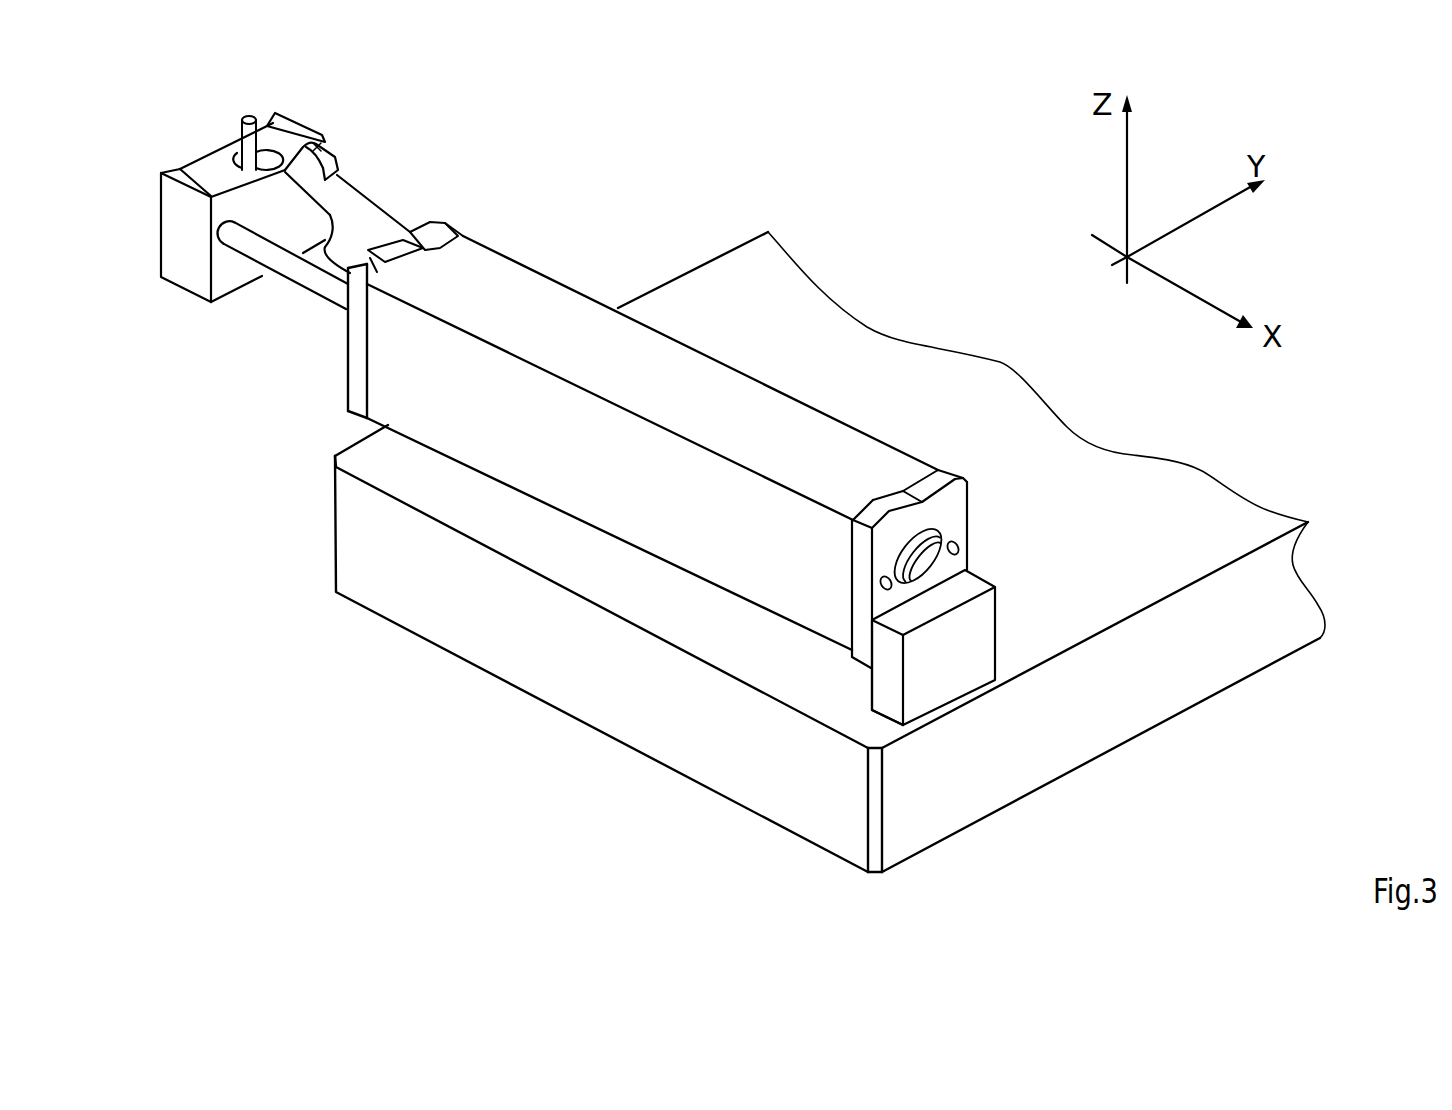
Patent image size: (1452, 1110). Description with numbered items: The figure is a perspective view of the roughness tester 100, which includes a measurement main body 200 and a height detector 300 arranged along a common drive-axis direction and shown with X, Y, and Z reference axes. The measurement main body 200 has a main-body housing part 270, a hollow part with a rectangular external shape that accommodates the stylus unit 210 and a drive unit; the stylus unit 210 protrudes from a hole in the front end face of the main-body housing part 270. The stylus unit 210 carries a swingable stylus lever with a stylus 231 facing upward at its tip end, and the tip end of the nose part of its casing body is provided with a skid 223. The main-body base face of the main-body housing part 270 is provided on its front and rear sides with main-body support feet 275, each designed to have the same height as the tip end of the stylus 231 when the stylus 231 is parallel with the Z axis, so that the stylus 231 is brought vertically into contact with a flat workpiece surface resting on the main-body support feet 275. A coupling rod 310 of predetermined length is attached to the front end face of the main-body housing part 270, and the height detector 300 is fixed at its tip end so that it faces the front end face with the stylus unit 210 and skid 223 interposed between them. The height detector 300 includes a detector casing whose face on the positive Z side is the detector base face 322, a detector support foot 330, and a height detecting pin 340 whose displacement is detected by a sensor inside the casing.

The roughness tester 100 is at (548, 150).
The measurement main body 200 is at (532, 288).
The stylus unit 210 is at (372, 213).
The skid 223 is at (335, 157).
The stylus 231 is at (317, 147).
The main-body housing part 270 is at (847, 437).
The main-body support foot 275 is at (433, 243).
The height detector 300 is at (170, 258).
The coupling rod 310 is at (308, 276).
The detector base face 322 is at (208, 163).
The detector support foot 330 is at (293, 123).
The height detecting pin 340 is at (249, 114).